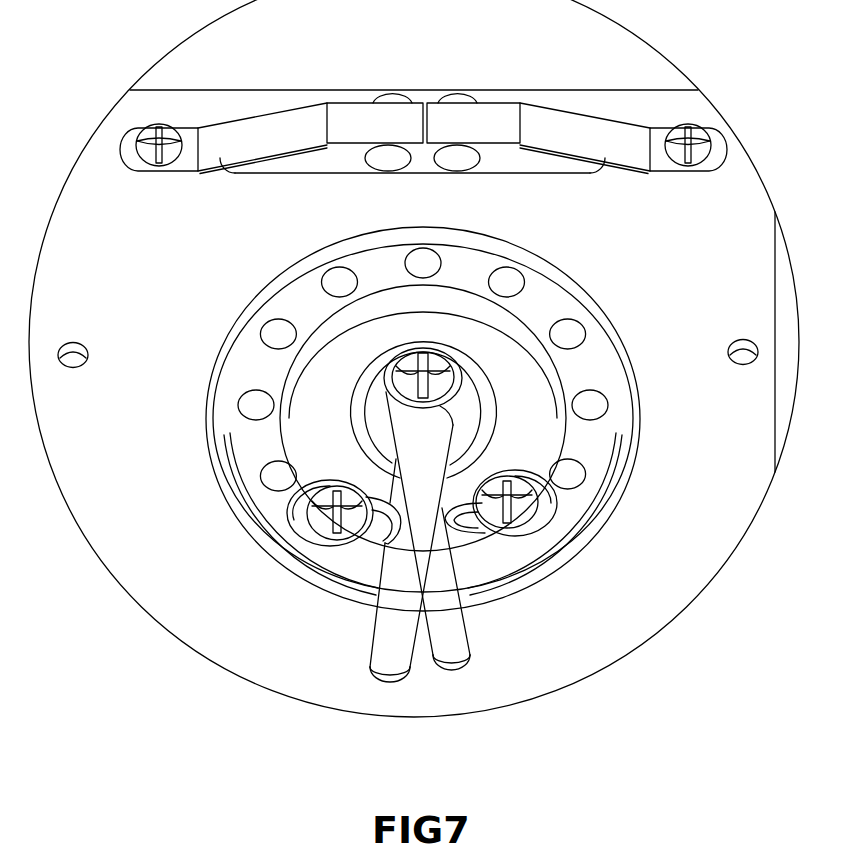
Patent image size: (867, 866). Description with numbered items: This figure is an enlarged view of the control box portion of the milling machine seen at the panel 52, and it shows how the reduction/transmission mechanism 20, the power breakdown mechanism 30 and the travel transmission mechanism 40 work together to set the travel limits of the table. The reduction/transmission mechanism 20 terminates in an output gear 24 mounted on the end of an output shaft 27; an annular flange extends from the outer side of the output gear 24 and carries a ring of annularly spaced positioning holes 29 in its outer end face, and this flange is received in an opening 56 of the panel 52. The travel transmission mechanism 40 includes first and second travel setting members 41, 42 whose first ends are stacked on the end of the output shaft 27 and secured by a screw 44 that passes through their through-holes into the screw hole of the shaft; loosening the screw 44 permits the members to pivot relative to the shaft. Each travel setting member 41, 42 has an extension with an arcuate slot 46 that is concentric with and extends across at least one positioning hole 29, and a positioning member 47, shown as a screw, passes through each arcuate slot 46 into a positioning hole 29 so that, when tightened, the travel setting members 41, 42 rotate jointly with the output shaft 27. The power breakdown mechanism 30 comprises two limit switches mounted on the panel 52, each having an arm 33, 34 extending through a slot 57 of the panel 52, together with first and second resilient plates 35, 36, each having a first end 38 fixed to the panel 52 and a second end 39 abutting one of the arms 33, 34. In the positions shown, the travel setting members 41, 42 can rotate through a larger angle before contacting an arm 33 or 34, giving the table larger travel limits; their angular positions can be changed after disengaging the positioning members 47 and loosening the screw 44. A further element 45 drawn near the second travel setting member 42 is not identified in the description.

The reduction/transmission mechanism 20 is at (298, 566).
The output gear 24 is at (218, 427).
The output shaft 27 is at (353, 447).
The positioning holes 29 is at (243, 403).
The power breakdown mechanism 30 is at (414, 124).
The arm 33 is at (463, 160).
The arm 34 is at (388, 160).
The first resilient plate 35 is at (555, 122).
The second resilient plate 36 is at (293, 122).
The first end 38 is at (122, 143).
The second end 39 is at (387, 117).
The travel transmission mechanism 40 is at (394, 582).
The first travel setting member 41 is at (453, 636).
The second travel setting member 42 is at (383, 642).
The screw 44 is at (400, 372).
The right tab 45 is at (478, 545).
The arcuate slot 46 is at (383, 537).
The positioning member 47 is at (338, 512).
The panel 52 is at (752, 490).
The opening 56 is at (600, 437).
The slot 57 is at (283, 165).